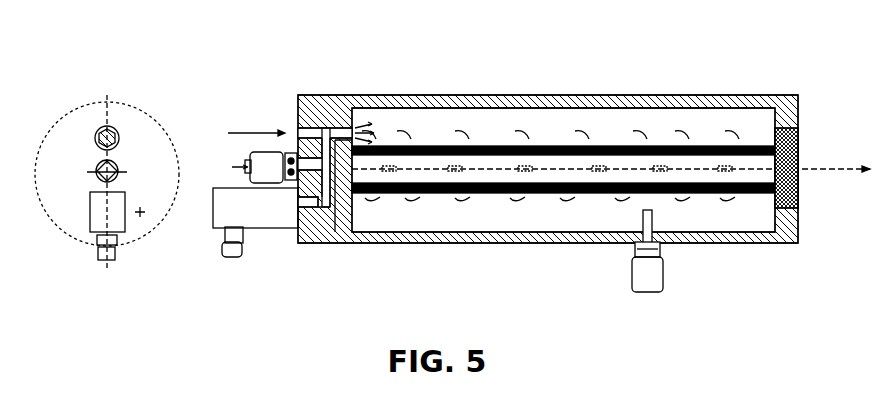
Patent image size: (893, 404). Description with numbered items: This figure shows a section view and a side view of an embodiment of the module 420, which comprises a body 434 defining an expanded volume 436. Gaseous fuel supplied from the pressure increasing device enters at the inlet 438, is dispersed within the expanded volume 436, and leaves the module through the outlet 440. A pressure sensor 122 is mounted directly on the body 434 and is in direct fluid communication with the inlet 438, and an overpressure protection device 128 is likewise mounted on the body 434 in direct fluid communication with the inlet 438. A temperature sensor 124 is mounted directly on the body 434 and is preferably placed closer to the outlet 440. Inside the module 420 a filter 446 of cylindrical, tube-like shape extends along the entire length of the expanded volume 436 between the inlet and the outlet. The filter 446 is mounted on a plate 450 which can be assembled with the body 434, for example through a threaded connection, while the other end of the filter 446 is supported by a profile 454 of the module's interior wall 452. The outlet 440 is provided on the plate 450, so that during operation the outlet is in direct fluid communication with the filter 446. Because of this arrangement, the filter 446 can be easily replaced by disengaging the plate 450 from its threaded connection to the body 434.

The module 420 is at (508, 56).
The body 434 is at (583, 97).
The expanded volume 436 is at (650, 123).
The inlet 438 is at (296, 126).
The pressure sensor 122 is at (248, 158).
The overpressure protection device 128 is at (272, 217).
The plate 450 is at (800, 142).
The outlet 440 is at (800, 172).
The interior wall 452 is at (352, 196).
The profile 454 is at (380, 195).
The filter 446 is at (500, 184).
The temperature sensor 124 is at (655, 267).